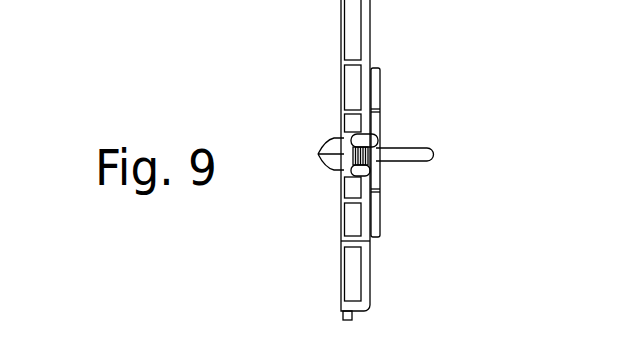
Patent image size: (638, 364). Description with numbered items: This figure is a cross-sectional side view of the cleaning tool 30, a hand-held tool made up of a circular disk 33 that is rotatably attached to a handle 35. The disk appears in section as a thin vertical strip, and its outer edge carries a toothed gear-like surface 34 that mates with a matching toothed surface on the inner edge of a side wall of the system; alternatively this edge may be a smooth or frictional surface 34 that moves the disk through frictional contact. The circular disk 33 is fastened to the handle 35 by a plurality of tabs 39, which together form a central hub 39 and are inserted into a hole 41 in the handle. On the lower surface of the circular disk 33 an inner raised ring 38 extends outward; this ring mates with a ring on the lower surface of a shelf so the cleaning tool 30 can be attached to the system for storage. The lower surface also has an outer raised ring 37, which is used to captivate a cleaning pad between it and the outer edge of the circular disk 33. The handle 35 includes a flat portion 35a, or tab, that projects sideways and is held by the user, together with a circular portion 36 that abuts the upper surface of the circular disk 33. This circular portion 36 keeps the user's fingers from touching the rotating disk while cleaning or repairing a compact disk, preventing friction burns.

The cleaning tool 30 is at (270, 88).
The circular disk 33 is at (369, 281).
The toothed gear-like surface 34 is at (347, 320).
The handle 35 is at (428, 226).
The flat portion 35a is at (434, 156).
The circular portion 36 is at (381, 88).
The outer raised ring 37 is at (345, 62).
The inner raised ring 38 is at (347, 199).
The tabs 39 is at (318, 154).
The hole 41 is at (380, 138).